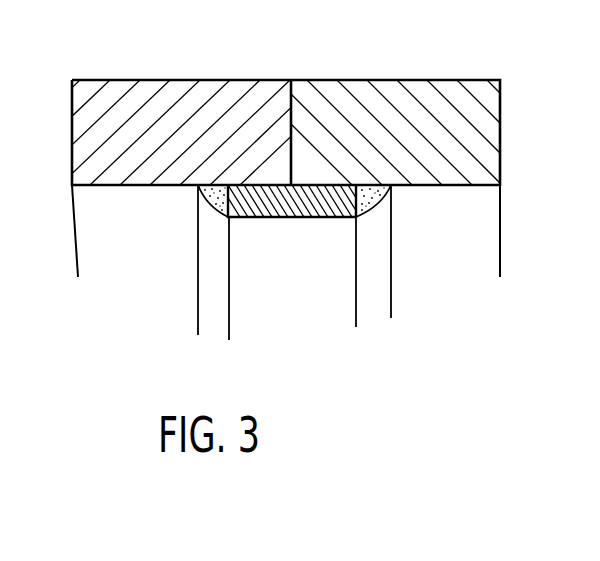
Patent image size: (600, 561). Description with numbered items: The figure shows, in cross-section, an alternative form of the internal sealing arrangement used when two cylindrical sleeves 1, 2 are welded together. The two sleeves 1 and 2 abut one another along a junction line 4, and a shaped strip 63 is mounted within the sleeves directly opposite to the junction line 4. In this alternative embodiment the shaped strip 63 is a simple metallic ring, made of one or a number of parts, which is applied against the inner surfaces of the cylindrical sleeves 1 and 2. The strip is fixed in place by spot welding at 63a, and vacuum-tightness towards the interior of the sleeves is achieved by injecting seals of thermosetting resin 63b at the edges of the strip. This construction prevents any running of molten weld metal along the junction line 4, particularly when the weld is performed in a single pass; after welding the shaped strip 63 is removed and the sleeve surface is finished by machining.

The cylindrical sleeve 1 is at (145, 90).
The cylindrical sleeve 2 is at (430, 97).
The junction line 4 is at (288, 92).
The shaped strip 63 is at (286, 220).
The spot weld 63a is at (197, 190).
The seal of thermosetting resin 63b is at (385, 197).